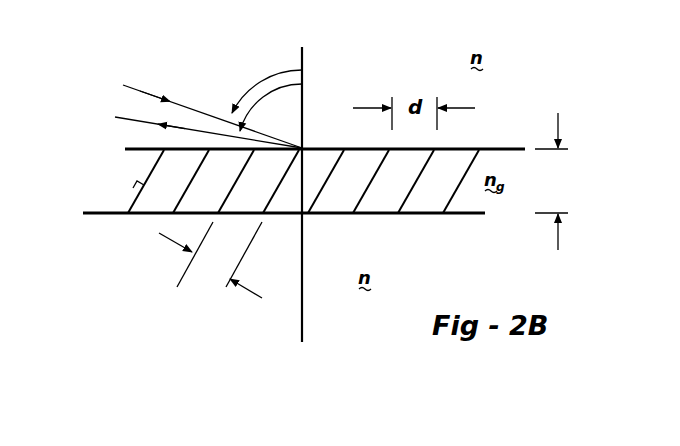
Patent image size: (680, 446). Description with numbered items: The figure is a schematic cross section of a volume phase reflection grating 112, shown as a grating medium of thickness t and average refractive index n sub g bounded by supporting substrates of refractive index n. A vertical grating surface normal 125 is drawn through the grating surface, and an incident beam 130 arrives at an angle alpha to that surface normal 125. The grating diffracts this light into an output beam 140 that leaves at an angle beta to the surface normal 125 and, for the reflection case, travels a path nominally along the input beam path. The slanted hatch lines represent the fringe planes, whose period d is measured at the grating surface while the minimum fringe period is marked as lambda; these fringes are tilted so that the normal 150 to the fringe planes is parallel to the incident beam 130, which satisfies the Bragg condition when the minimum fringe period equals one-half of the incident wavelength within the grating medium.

The diffraction grating 112 is at (586, 162).
The surface normal 125 is at (306, 182).
The incident beam 130 is at (192, 104).
The diffracted beam 140 is at (188, 116).
The normal to the fringe planes 150 is at (158, 202).